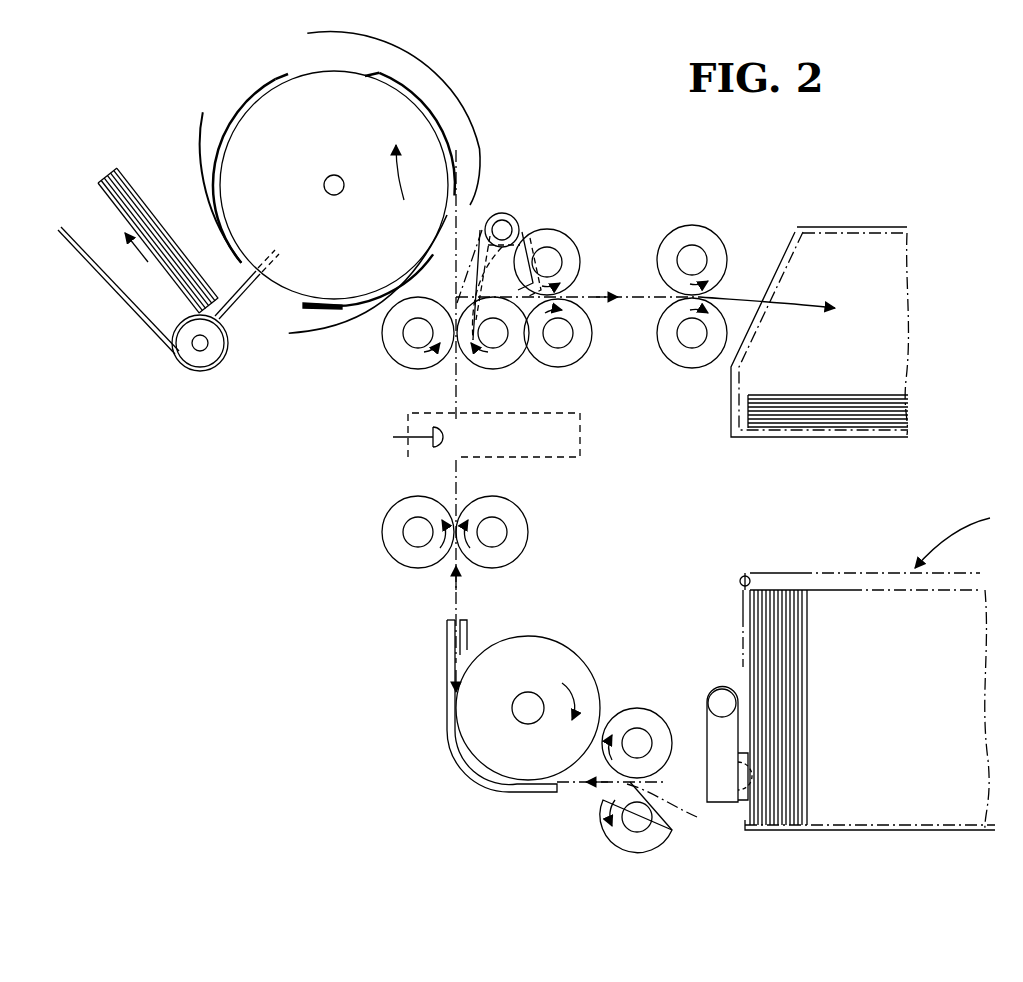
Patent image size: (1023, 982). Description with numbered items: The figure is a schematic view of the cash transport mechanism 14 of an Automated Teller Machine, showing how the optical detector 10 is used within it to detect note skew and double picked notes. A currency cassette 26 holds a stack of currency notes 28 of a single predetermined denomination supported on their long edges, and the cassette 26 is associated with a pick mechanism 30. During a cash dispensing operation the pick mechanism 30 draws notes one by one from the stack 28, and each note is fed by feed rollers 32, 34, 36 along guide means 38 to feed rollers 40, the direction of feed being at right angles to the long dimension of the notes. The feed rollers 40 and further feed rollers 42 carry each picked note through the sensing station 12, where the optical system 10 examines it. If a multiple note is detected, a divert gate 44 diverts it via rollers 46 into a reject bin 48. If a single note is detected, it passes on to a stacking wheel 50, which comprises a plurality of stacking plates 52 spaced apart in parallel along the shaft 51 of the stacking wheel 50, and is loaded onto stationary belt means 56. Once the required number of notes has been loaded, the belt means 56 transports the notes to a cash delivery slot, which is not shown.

The detector 10 is at (401, 438).
The sensing station 12 is at (580, 457).
The transport mechanism 14 is at (240, 704).
The currency cassette 26 is at (867, 668).
The stack of currency notes 28 is at (800, 699).
The pick mechanism 30 is at (722, 793).
The feed roller 32 is at (605, 832).
The feed roller 34 is at (628, 708).
The feed roller 36 is at (560, 648).
The guide means 38 is at (465, 765).
The feed rollers 40 is at (393, 557).
The further feed rollers 42 is at (398, 354).
The divert gate 44 is at (505, 215).
The rollers 46 is at (700, 226).
The reject bin 48 is at (816, 440).
The stacking wheel 50 is at (170, 66).
The shaft 51 is at (322, 178).
The stacking plates 52 is at (240, 181).
The belt means 56 is at (100, 288).